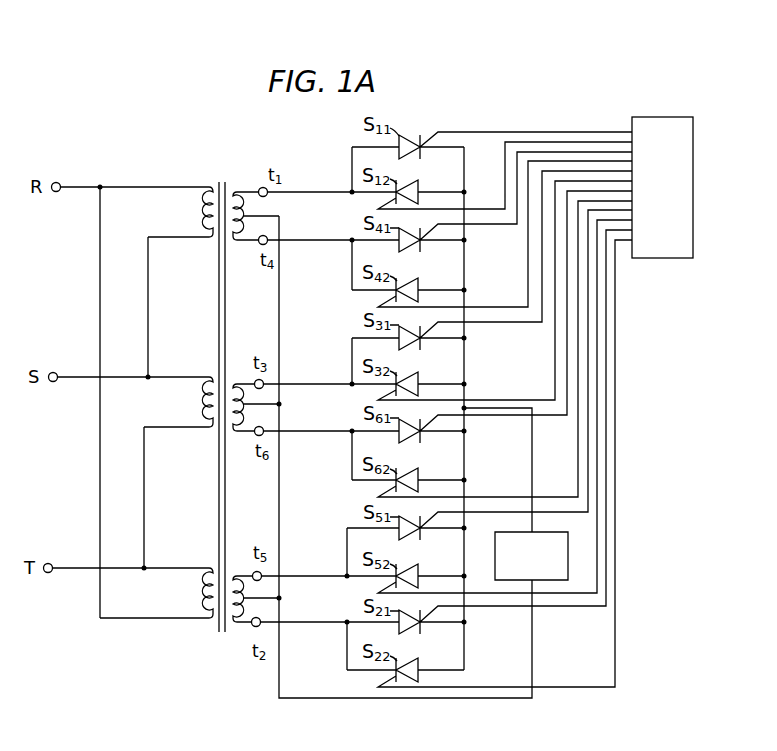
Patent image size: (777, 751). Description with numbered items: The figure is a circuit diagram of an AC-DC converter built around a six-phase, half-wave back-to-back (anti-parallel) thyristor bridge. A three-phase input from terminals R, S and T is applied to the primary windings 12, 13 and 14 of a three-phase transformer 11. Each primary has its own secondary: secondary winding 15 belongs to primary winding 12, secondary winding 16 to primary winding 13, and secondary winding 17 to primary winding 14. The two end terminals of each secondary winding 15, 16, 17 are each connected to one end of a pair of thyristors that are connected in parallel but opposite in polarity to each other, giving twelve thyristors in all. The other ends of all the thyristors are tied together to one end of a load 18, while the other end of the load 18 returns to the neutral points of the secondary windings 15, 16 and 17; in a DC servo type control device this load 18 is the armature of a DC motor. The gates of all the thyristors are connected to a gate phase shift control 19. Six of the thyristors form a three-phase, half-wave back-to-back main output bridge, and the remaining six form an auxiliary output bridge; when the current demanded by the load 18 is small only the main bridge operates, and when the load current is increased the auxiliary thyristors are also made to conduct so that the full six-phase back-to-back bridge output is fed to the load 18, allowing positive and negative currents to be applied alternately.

The three-phase transformer 11 is at (227, 180).
The primary winding 12 is at (212, 239).
The primary winding 13 is at (209, 429).
The primary winding 14 is at (209, 620).
The secondary winding 15 is at (237, 242).
The secondary winding 16 is at (233, 433).
The secondary winding 17 is at (233, 624).
The load 18 is at (494, 556).
The gate phase shift control 19 is at (656, 117).